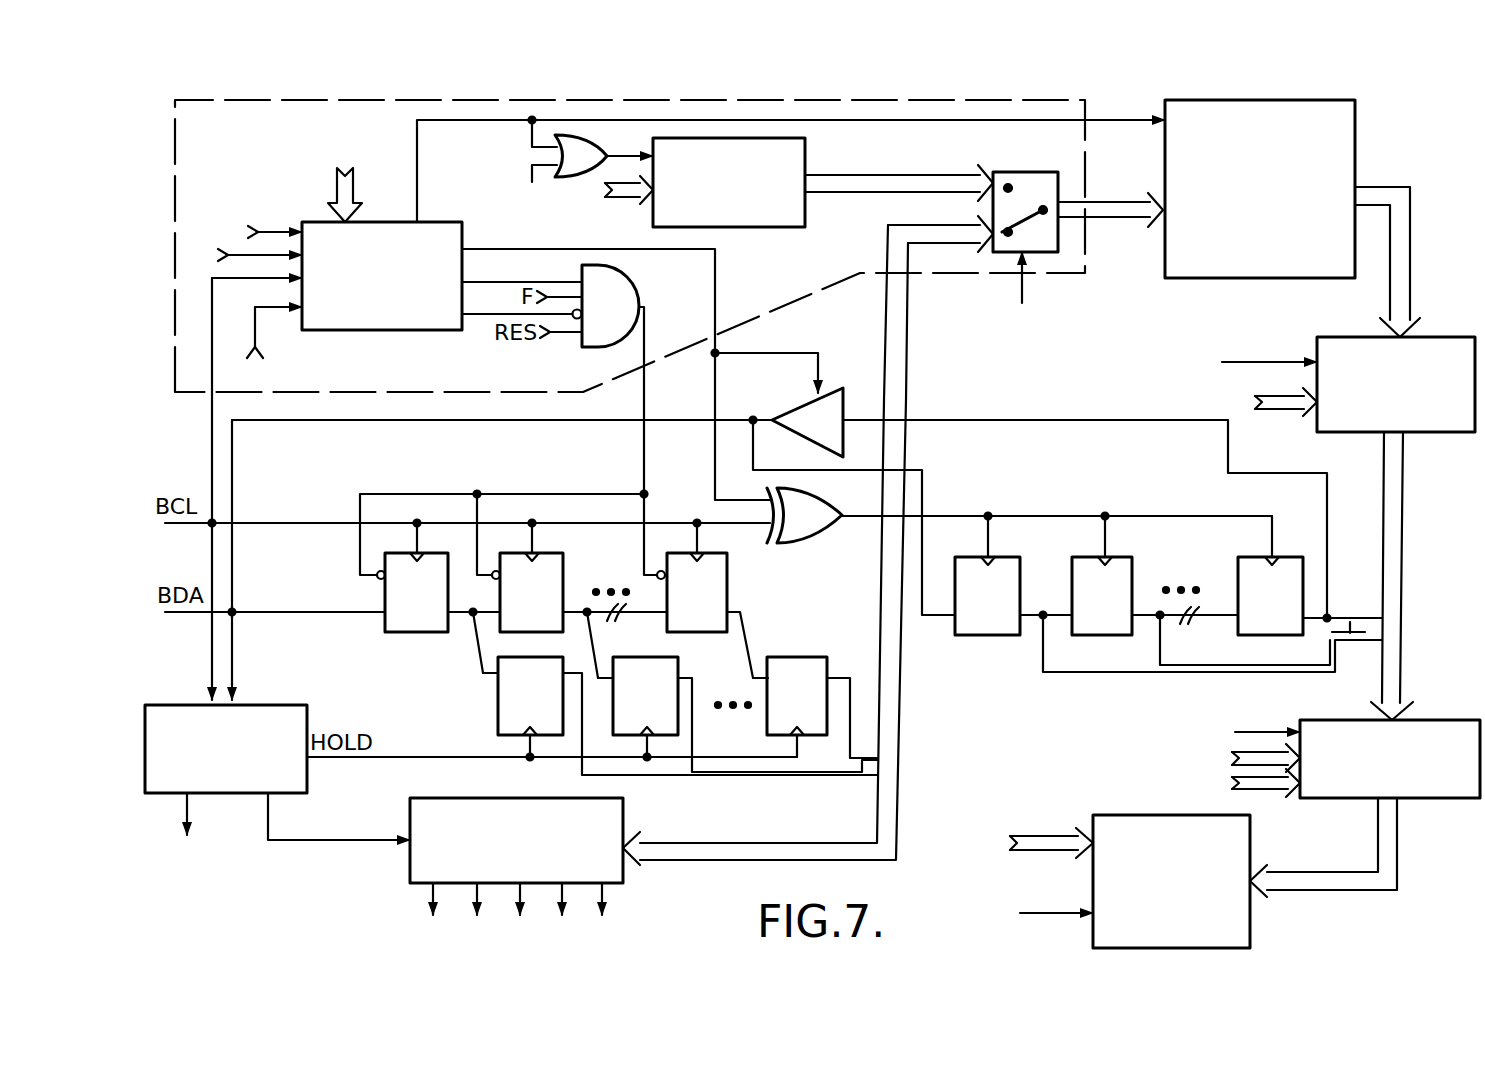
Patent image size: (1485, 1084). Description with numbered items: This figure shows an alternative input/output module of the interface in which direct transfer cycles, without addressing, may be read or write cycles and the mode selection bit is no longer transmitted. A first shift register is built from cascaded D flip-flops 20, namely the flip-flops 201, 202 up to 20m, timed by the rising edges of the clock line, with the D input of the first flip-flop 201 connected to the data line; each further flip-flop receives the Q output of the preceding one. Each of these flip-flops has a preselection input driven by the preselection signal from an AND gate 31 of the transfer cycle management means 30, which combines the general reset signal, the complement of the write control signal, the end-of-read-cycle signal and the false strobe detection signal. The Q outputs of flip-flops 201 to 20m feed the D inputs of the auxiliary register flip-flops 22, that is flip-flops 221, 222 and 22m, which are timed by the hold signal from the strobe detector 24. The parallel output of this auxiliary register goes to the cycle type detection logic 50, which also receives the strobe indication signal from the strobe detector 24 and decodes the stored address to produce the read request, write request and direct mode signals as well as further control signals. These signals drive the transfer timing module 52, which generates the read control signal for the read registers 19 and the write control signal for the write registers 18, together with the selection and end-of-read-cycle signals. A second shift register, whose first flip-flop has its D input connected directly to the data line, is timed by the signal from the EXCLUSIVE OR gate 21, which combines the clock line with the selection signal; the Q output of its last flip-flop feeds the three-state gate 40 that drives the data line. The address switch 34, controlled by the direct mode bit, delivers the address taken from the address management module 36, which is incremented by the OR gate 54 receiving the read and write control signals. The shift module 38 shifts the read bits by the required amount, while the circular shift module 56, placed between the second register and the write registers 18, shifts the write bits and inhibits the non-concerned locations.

The group of write registers 18 is at (1115, 813).
The group of read registers 19 is at (1357, 133).
The cascaded D flip-flops of the shift registers 20 is at (871, 596).
The first flip-flop of the first shift register 201 is at (433, 633).
The second flip-flop of the first shift register 202 is at (588, 562).
The last flip-flop of the first shift register 20m is at (732, 582).
The EXCLUSIVE OR gate 21 is at (830, 532).
The auxiliary register D flip-flops 22 is at (658, 693).
The first flip-flop of the auxiliary register 221 is at (497, 697).
The second flip-flop of the auxiliary register 222 is at (678, 667).
The last flip-flop of the auxiliary register 22m is at (793, 655).
The strobe detector 24 is at (180, 703).
The transfer cycle management means 30 is at (187, 390).
The AND gate 31 is at (602, 264).
The address switch 34 is at (1027, 172).
The address management module 36 is at (805, 209).
The shift module 38 is at (1315, 337).
The three-state gate 40 is at (830, 390).
The cycle type detection logic 50 is at (623, 877).
The transfer timing module 52 is at (415, 331).
The OR gate 54 is at (583, 152).
The circular shift module 56 is at (1443, 800).